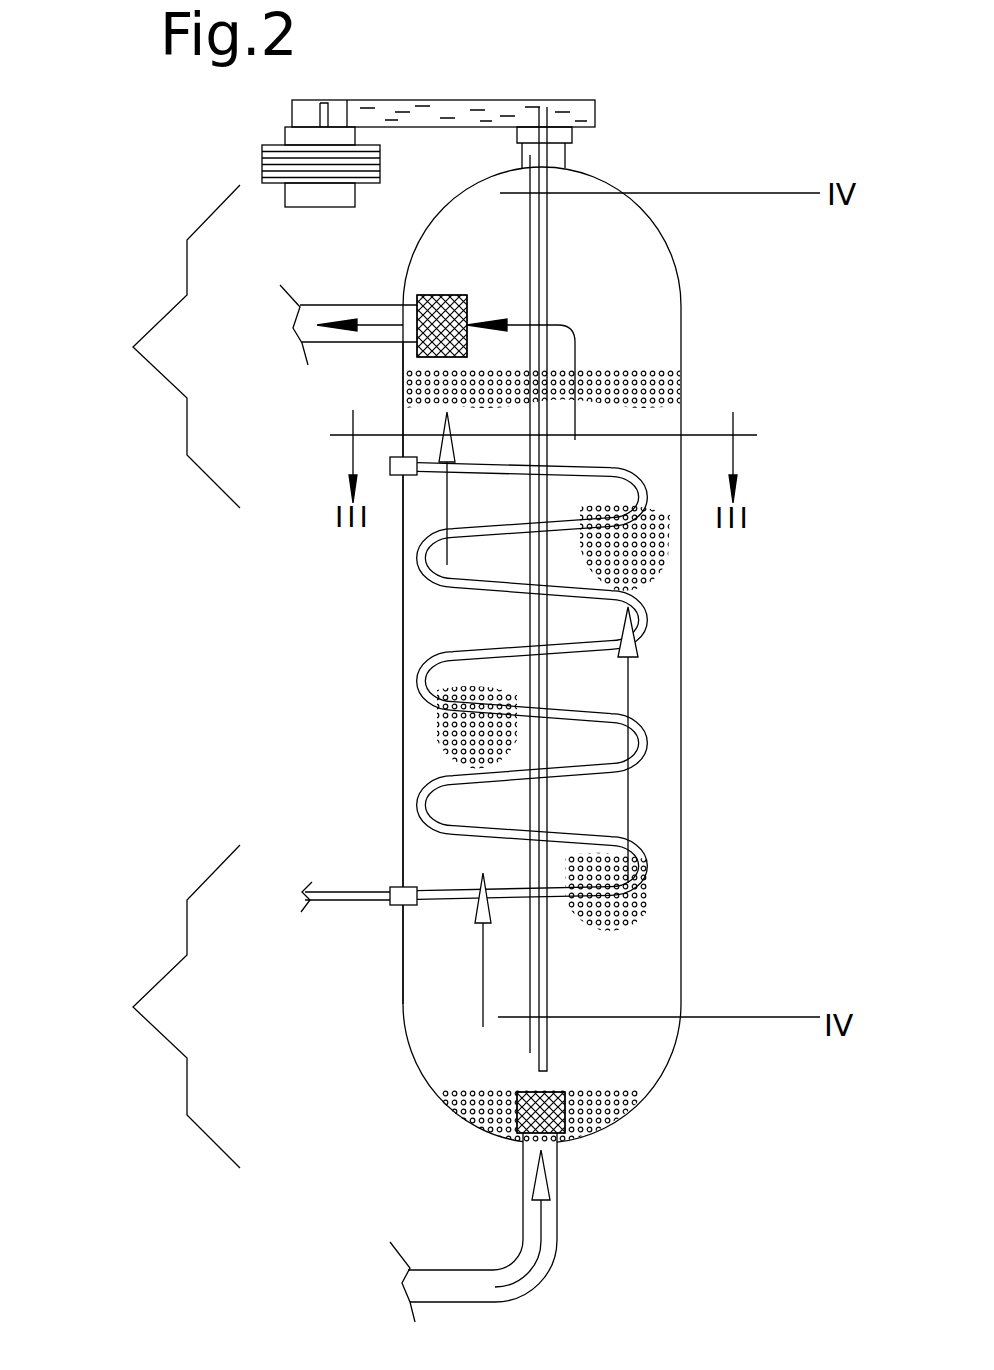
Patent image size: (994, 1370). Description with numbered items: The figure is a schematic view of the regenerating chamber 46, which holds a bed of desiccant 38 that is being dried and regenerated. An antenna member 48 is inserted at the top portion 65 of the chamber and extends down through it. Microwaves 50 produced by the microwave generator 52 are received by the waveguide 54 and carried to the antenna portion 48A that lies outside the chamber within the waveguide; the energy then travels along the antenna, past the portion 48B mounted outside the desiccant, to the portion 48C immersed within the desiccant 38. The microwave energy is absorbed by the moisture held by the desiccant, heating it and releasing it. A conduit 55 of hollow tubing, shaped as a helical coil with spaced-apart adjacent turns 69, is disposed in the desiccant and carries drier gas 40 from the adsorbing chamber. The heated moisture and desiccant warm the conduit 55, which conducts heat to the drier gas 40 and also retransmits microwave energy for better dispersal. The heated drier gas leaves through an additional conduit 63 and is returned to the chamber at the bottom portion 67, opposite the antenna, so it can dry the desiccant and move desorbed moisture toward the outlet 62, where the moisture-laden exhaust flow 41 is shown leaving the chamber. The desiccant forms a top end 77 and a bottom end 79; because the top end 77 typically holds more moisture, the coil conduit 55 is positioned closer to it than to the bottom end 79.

The desiccant 38 is at (655, 387).
The drier gas 40 is at (447, 517).
The exhaust gas flow 41 is at (360, 305).
The regenerating chamber 46 is at (683, 300).
The antenna member 48 is at (547, 995).
The antenna portion within waveguide 48A is at (550, 112).
The antenna portion outside desiccant 48B is at (548, 268).
The antenna portion within desiccant 48C is at (540, 822).
The microwaves 50 is at (433, 108).
The microwave generator 52 is at (262, 160).
The waveguide 54 is at (372, 100).
The conduit 55 is at (585, 535).
The outlet 62 is at (445, 295).
The additional conduit 63 is at (365, 888).
The top portion 65 is at (148, 333).
The bottom portion 67 is at (148, 993).
The adjacent turns 69 is at (672, 612).
The top end of desiccant 77 is at (600, 370).
The bottom end of desiccant 79 is at (500, 1133).